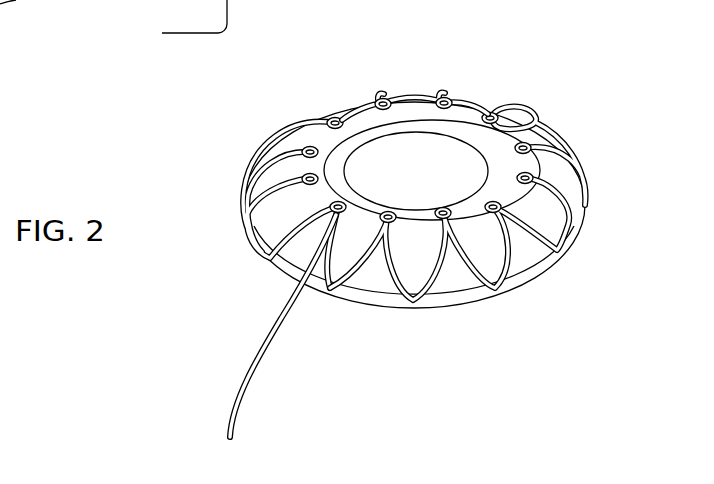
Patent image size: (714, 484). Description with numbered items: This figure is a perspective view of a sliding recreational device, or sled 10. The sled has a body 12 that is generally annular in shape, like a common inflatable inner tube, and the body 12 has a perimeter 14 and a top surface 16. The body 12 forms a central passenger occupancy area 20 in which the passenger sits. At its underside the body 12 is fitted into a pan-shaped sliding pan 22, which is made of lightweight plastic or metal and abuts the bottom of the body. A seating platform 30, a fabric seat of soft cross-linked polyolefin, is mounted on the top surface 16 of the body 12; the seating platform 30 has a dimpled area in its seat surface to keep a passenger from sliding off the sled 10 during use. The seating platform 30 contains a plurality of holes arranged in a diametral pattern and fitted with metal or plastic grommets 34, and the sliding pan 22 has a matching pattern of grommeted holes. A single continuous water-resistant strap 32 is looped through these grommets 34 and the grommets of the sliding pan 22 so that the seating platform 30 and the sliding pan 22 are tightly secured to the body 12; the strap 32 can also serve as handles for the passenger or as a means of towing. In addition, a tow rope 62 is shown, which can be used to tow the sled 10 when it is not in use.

In FIG. 2, the sled 10 is at (513, 47).
In FIG. 2, the body 12 is at (540, 133).
In FIG. 2, the perimeter 14 is at (297, 260).
In FIG. 2, the top surface 16 is at (292, 138).
In FIG. 2, the passenger occupancy area 20 is at (392, 167).
In FIG. 1, the sliding pan 22 is at (78, 0).
In FIG. 2, the sliding pan 22 is at (380, 308).
In FIG. 2, the seating platform 30 is at (410, 108).
In FIG. 2, the strap 32 is at (482, 272).
In FIG. 2, the grommets 34 is at (490, 117).
In FIG. 2, the tow rope 62 is at (240, 405).